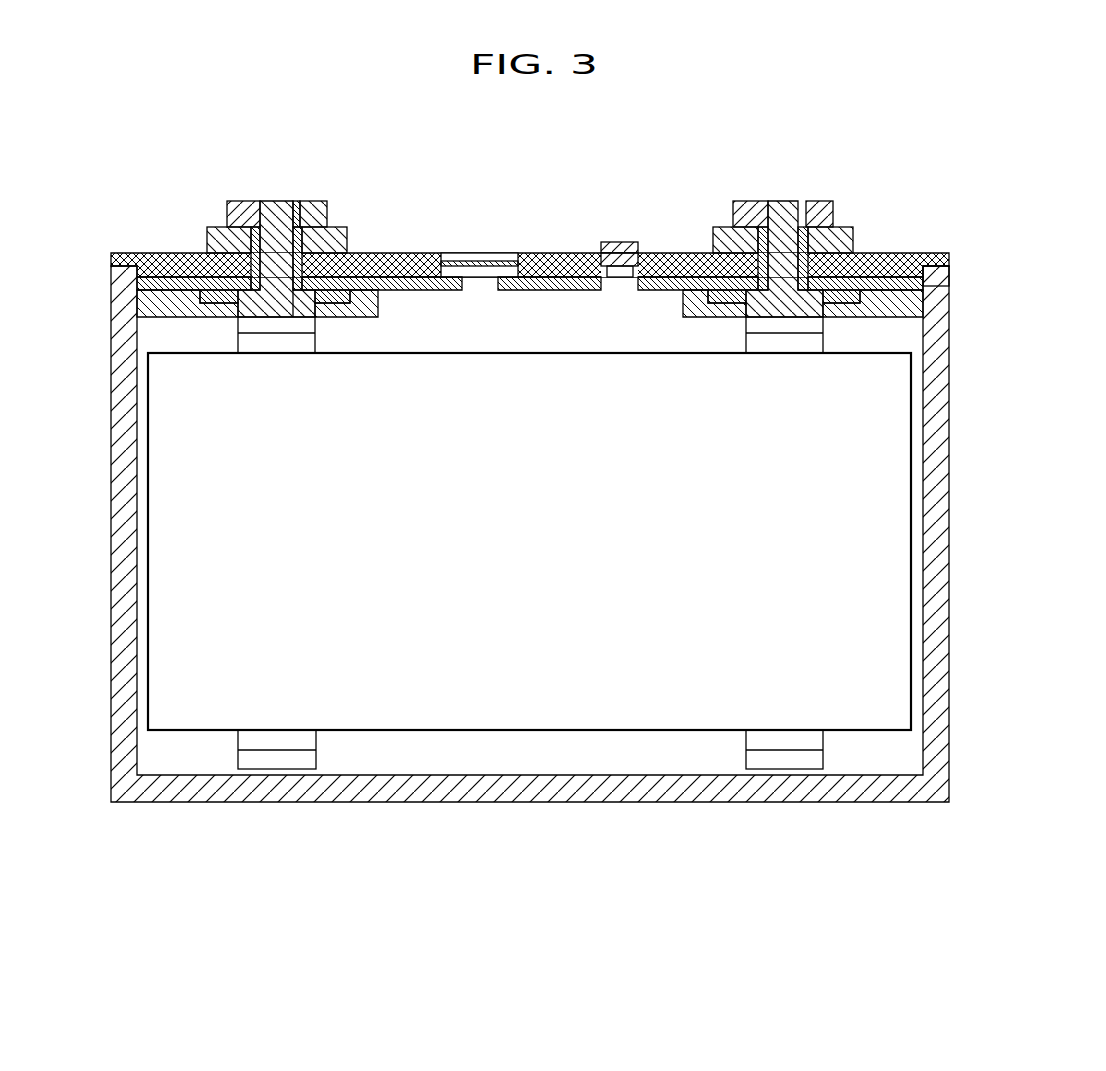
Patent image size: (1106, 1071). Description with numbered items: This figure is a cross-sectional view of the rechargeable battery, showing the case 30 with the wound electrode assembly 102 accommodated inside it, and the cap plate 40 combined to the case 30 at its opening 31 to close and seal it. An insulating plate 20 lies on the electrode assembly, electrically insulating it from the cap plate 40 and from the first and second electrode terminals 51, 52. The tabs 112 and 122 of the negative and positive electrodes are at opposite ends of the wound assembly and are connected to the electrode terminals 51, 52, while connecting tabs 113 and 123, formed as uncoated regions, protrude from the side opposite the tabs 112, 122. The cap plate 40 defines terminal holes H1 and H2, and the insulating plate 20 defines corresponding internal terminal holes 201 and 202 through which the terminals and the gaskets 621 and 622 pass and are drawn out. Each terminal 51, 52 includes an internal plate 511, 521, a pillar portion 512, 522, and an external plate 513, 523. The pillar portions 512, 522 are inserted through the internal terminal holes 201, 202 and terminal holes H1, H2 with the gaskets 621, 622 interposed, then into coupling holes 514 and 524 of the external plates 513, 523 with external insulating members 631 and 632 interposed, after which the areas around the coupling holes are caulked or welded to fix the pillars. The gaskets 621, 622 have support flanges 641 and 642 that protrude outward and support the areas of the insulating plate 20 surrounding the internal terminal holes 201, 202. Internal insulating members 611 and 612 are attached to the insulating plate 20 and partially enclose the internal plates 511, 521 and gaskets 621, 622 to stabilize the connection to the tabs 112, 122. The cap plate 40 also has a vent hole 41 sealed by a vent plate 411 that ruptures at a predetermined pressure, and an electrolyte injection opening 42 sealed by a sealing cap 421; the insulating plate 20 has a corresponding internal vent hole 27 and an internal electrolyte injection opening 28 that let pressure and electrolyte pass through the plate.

The insulating plate 20 is at (137, 266).
The cap plate 40 is at (178, 265).
The case 30 is at (952, 583).
The opening 31 is at (925, 255).
The electrode assembly 102 is at (918, 407).
The first electrode terminal 51 is at (273, 201).
The internal plate 511 is at (215, 230).
The pillar portion 512 is at (278, 202).
The external plate 513 is at (240, 202).
The coupling hole 514 is at (290, 205).
The second electrode terminal 52 is at (787, 201).
The internal plate 521 is at (845, 232).
The pillar portion 522 is at (783, 210).
The external plate 523 is at (818, 207).
The coupling hole 524 is at (776, 205).
The terminal hole H1 is at (300, 240).
The terminal hole H2 is at (762, 240).
The gasket 621 is at (322, 212).
The external insulating member 631 is at (335, 240).
The gasket 622 is at (745, 215).
The external insulating member 632 is at (730, 240).
The internal insulating member 611 is at (160, 300).
The internal insulating member 612 is at (900, 300).
The support flange 641 is at (215, 297).
The support flange 642 is at (722, 320).
The vent hole 41 is at (460, 258).
The vent plate 411 is at (500, 262).
The sealing cap 421 is at (620, 244).
The electrolyte injection opening 42 is at (622, 275).
The internal vent hole 27 is at (480, 287).
The internal electrolyte injection opening 28 is at (614, 288).
The internal terminal hole 201 is at (295, 320).
The internal terminal hole 202 is at (830, 263).
The tab 112 is at (272, 327).
The tab 122 is at (808, 345).
The connecting tab 113 is at (286, 740).
The connecting tab 123 is at (790, 740).